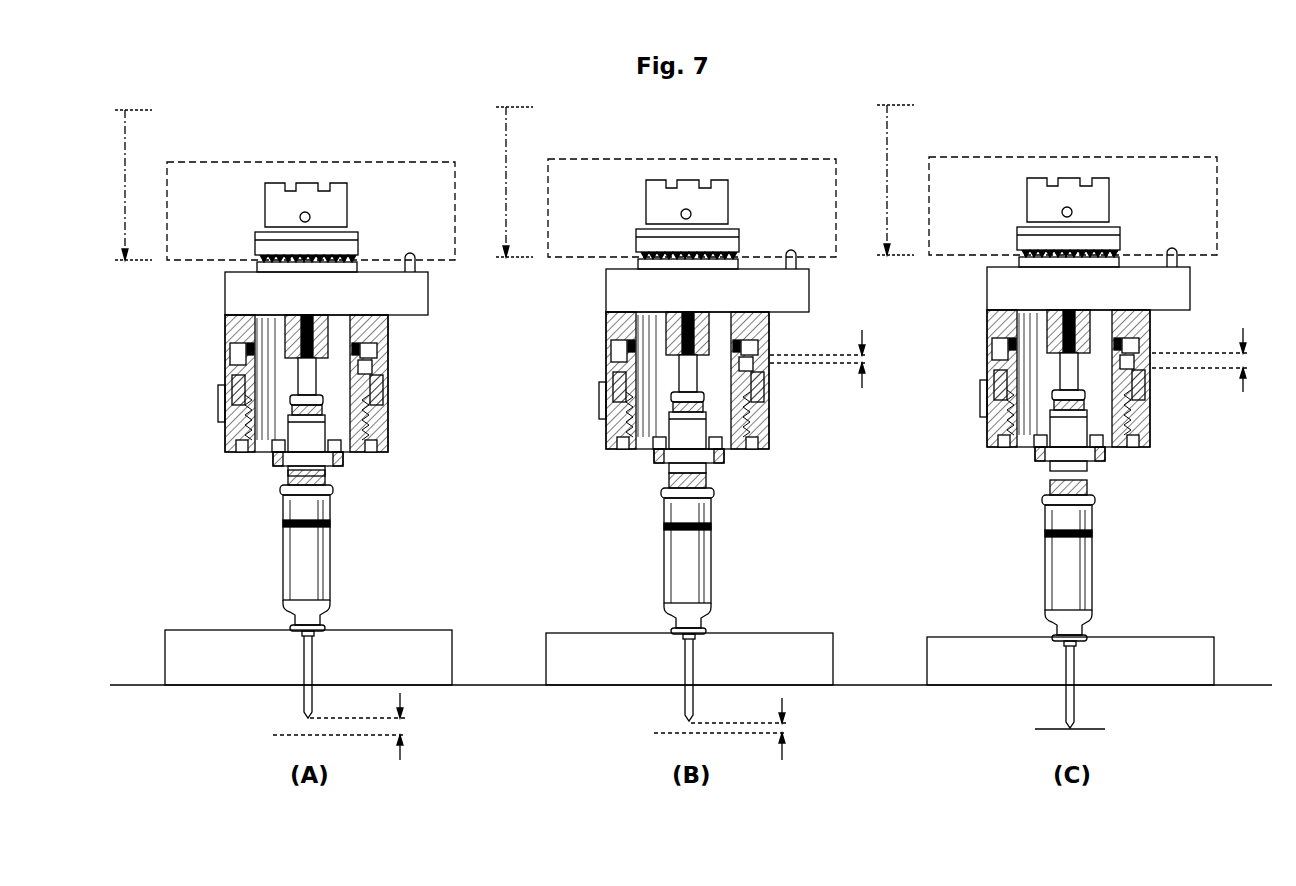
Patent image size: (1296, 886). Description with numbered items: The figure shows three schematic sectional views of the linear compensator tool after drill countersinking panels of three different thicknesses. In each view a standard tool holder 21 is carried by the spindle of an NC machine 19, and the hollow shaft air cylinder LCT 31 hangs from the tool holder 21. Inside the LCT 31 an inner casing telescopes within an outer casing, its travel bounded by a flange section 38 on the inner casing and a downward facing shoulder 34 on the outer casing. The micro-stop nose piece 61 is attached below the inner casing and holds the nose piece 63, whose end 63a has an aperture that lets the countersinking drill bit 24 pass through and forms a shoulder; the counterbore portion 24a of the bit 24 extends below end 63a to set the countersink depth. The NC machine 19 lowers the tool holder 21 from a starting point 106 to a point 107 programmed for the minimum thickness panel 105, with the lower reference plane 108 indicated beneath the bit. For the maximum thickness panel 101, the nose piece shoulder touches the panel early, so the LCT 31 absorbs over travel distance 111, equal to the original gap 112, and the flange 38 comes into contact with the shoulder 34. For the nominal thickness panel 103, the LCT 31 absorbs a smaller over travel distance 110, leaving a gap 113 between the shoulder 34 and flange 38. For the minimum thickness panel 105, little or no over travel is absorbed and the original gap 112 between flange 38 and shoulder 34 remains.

In FIG. 7A, the NC machine 19 is at (241, 161).
In FIG. 7B, the NC machine 19 is at (692, 188).
In FIG. 7C, the NC machine 19 is at (1073, 186).
In FIG. 7A, the standard tool holder 21 is at (346, 212).
In FIG. 7B, the standard tool holder 21 is at (713, 202).
In FIG. 7C, the standard tool holder 21 is at (1094, 200).
In FIG. 7A, the countersinking drill bit 24 is at (314, 701).
In FIG. 7B, the countersinking drill bit 24 is at (723, 680).
In FIG. 7C, the countersinking drill bit 24 is at (1104, 687).
In FIG. 7A, the counterbore portion 24a is at (316, 636).
In FIG. 7B, the counterbore portion 24a is at (732, 652).
In FIG. 7C, the counterbore portion 24a is at (1113, 658).
In FIG. 7A, the hollow shaft air cylinder LCT 31 is at (388, 470).
In FIG. 7B, the hollow shaft air cylinder LCT 31 is at (724, 407).
In FIG. 7C, the hollow shaft air cylinder LCT 31 is at (1105, 405).
In FIG. 7A, the downward facing shoulder 34 is at (372, 352).
In FIG. 7B, the downward facing shoulder 34 is at (782, 340).
In FIG. 7C, the downward facing shoulder 34 is at (1163, 338).
In FIG. 7A, the flange section 38 is at (372, 366).
In FIG. 7B, the flange section 38 is at (784, 379).
In FIG. 7C, the flange section 38 is at (1165, 377).
In FIG. 7A, the micro-stop nose piece 61 is at (297, 594).
In FIG. 7B, the micro-stop nose piece 61 is at (676, 597).
In FIG. 7C, the micro-stop nose piece 61 is at (1059, 604).
In FIG. 7A, the nose piece 63 is at (332, 556).
In FIG. 7B, the nose piece 63 is at (687, 563).
In FIG. 7C, the nose piece 63 is at (1109, 570).
In FIG. 7A, the end of nose piece 63a is at (326, 628).
In FIG. 7B, the end of nose piece 63a is at (729, 617).
In FIG. 7C, the end of nose piece 63a is at (1110, 624).
In FIG. 7A, the maximum thickness panel 101 is at (222, 629).
In FIG. 7B, the nominal thickness panel 103 is at (687, 638).
In FIG. 7C, the minimum thickness panel 105 is at (1067, 638).
In FIG. 7A, the starting point 106 is at (125, 96).
In FIG. 7B, the starting point 106 is at (533, 162).
In FIG. 7C, the starting point 106 is at (914, 160).
In FIG. 7A, the point 107 is at (125, 271).
In FIG. 7B, the point 107 is at (533, 272).
In FIG. 7C, the point 107 is at (914, 270).
In FIG. 7A, the reference plane 108 is at (286, 734).
In FIG. 7B, the reference plane 108 is at (694, 714).
In FIG. 7C, the reference plane 108 is at (1044, 711).
In FIG. 7B, the over travel distance 110 is at (784, 738).
In FIG. 7A, the over travel distance 111 is at (406, 728).
In FIG. 7C, the original gap 112 is at (1210, 342).
In FIG. 7B, the gap 113 is at (827, 340).